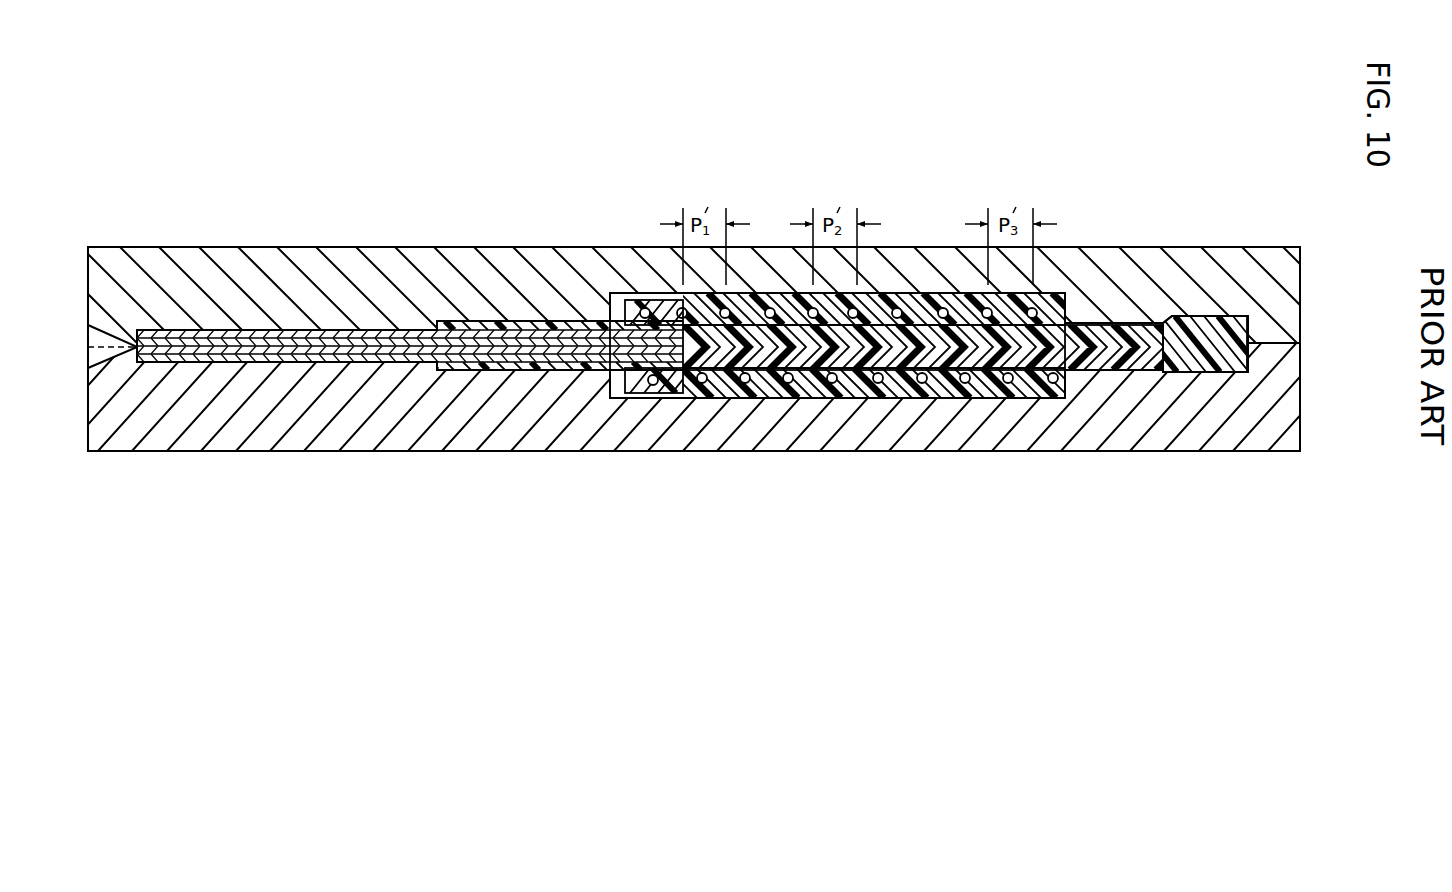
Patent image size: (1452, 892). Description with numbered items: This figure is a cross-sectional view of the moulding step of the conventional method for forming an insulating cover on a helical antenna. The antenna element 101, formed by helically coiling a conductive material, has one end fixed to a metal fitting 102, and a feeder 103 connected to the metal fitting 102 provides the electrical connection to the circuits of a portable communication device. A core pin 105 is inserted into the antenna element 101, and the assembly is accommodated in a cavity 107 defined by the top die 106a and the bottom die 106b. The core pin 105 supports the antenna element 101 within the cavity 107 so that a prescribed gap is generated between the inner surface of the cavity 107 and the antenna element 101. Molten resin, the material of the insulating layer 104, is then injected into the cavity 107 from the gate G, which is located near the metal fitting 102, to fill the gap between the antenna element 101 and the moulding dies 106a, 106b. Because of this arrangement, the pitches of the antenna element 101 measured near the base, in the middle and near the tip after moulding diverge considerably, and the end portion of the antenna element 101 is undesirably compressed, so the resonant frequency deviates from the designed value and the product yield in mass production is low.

The antenna element 101 is at (887, 380).
The metal fitting 102 is at (643, 378).
The feeder 103 is at (298, 340).
The insulating layer 104 is at (1005, 388).
The core pin 105 is at (1110, 348).
The top die 106a is at (1248, 283).
The bottom die 106b is at (1250, 415).
The cavity 107 is at (822, 372).
The gate G is at (606, 302).